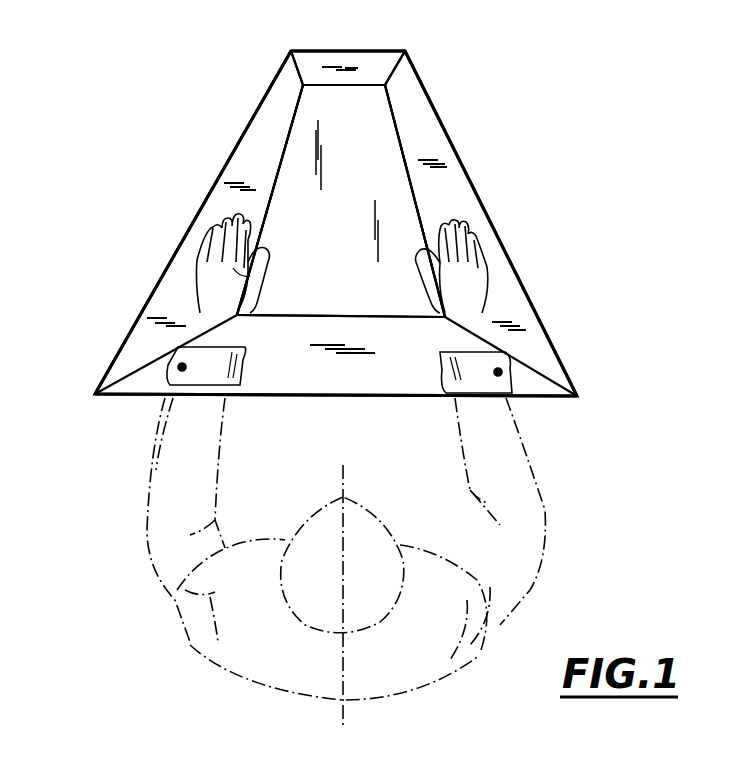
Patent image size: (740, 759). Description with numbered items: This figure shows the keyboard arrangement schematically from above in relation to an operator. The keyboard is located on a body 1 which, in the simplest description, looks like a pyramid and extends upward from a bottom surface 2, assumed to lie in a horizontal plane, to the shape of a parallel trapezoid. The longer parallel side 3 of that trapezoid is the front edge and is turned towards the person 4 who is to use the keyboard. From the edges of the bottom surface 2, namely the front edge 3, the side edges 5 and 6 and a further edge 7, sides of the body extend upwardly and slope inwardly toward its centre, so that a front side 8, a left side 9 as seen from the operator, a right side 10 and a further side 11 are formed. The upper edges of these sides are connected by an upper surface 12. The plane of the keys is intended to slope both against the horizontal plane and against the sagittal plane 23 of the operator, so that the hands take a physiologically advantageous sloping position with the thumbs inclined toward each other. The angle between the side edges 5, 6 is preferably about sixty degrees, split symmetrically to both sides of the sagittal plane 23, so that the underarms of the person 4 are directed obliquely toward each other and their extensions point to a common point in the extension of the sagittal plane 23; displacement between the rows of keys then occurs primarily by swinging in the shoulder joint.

The body 1 is at (382, 48).
The bottom surface 2 is at (455, 146).
The longer parallel side 3 is at (558, 400).
The person 4 is at (540, 520).
The side edge 5 is at (185, 238).
The side edge 6 is at (524, 274).
The further edge 7 is at (312, 50).
The left base edge 8 is at (128, 390).
The left side 9 is at (150, 330).
The right side 10 is at (545, 355).
The further side 11 is at (332, 53).
The upper surface 12 is at (297, 157).
The sagittal plane 23 is at (335, 718).